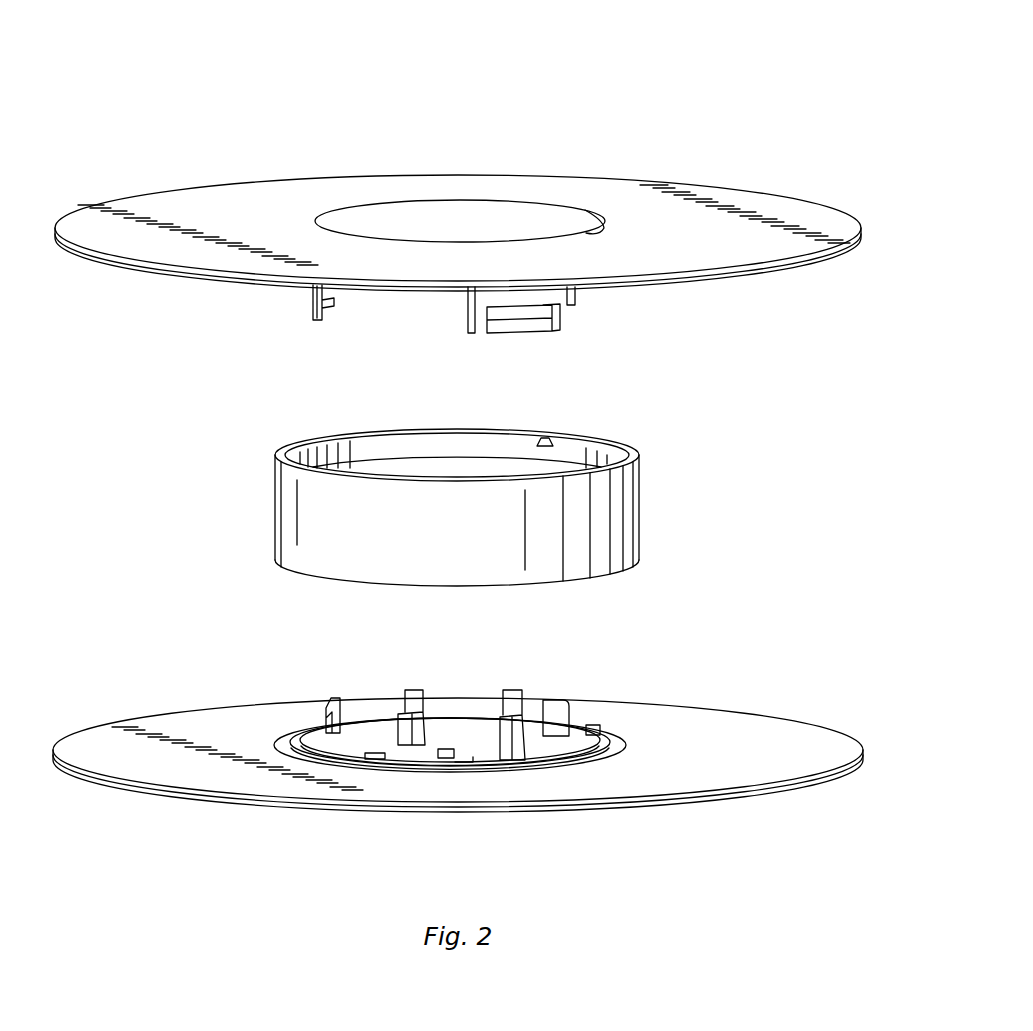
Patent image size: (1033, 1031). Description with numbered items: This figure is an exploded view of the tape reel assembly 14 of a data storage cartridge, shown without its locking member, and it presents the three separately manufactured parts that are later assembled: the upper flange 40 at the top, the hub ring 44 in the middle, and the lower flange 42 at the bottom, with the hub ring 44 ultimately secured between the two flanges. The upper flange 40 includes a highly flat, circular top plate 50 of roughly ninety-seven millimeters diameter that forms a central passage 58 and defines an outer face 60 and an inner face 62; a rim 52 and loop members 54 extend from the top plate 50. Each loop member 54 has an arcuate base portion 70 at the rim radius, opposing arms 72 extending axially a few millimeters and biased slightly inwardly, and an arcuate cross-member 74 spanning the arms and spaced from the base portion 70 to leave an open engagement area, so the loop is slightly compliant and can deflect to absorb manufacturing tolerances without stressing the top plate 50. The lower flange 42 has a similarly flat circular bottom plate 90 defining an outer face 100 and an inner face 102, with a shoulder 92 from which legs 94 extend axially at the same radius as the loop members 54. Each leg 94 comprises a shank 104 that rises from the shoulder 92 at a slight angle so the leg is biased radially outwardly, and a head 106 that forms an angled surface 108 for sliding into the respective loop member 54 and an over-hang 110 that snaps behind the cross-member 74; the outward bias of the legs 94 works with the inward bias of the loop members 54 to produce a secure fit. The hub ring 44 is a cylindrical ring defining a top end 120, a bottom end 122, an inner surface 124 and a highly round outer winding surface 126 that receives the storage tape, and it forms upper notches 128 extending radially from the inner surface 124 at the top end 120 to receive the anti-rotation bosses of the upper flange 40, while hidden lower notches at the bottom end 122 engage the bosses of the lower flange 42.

The tape reel assembly 14 is at (636, 89).
The upper flange 40 is at (799, 198).
The lower flange 42 is at (814, 728).
The hub ring 44 is at (643, 528).
The top plate 50 is at (700, 187).
The rim 52 is at (409, 215).
The loop members 54 is at (312, 296).
The central passage 58 is at (602, 228).
The outer face 60 is at (112, 200).
The inner face 62 is at (100, 262).
The base portion 70 is at (472, 296).
The opposing arms 72 is at (571, 312).
The cross-member 74 is at (531, 331).
The bottom plate 90 is at (735, 711).
The shoulder 92 is at (436, 725).
The legs 94 is at (548, 702).
The outer face 100 is at (146, 796).
The inner face 102 is at (97, 733).
The shank 104 is at (490, 761).
The head 106 is at (498, 725).
The angled surface 108 is at (330, 705).
The over-hang 110 is at (312, 740).
The top end 120 is at (641, 456).
The bottom end 122 is at (622, 571).
The inner surface 124 is at (393, 448).
The outer winding surface 126 is at (280, 508).
The upper notches 128 is at (554, 439).